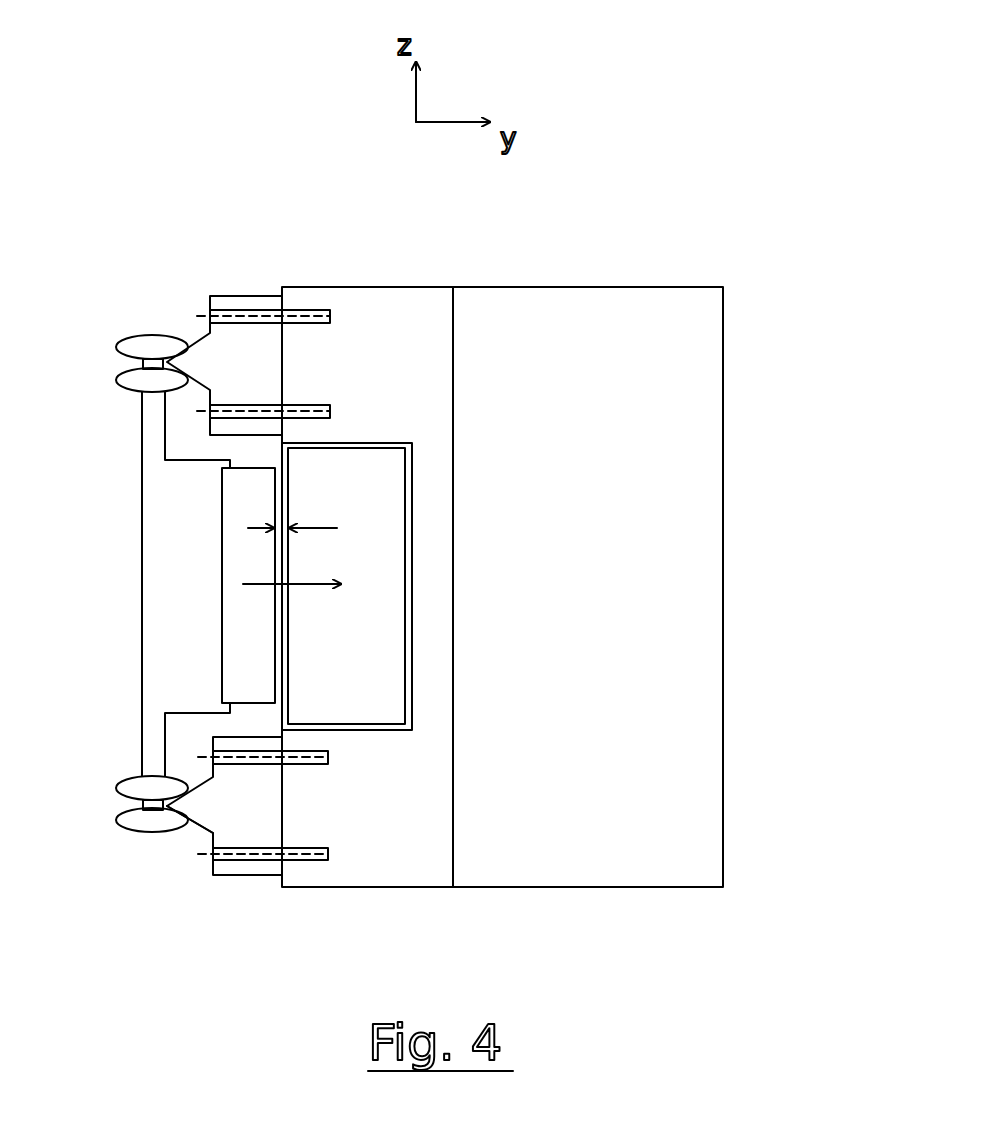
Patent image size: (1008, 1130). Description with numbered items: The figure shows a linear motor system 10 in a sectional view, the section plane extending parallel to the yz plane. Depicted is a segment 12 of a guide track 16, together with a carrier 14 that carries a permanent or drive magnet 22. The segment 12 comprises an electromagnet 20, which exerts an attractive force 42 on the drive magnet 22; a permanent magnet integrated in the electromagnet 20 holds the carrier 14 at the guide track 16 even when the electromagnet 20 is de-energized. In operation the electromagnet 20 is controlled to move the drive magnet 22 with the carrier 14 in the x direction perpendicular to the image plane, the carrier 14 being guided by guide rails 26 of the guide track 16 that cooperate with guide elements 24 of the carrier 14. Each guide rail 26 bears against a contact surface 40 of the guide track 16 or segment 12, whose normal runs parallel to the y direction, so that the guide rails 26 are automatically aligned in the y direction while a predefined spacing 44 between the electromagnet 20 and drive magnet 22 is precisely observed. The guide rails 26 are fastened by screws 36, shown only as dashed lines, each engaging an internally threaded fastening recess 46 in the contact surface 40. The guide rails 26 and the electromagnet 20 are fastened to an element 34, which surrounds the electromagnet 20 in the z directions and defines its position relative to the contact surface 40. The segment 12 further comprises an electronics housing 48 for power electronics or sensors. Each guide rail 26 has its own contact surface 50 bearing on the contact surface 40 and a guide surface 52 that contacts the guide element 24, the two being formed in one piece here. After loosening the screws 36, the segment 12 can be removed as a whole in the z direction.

The linear motor system 10 is at (788, 224).
The segment 12 is at (533, 286).
The carrier 14 is at (198, 602).
The guide track 16 is at (200, 237).
The electromagnet 20 is at (368, 714).
The drive magnet 22 is at (267, 667).
The guide element 24 is at (142, 338).
The guide rail 26 is at (260, 379).
The element 34 is at (400, 380).
The screw 36 is at (252, 853).
The contact surface 40 is at (276, 350).
The attractive force 42 is at (307, 585).
The spacing 44 is at (312, 527).
The fastening recess 46 is at (313, 860).
The electronics housing 48 is at (614, 572).
The contact surface 50 is at (284, 811).
The guide surface 52 is at (200, 830).